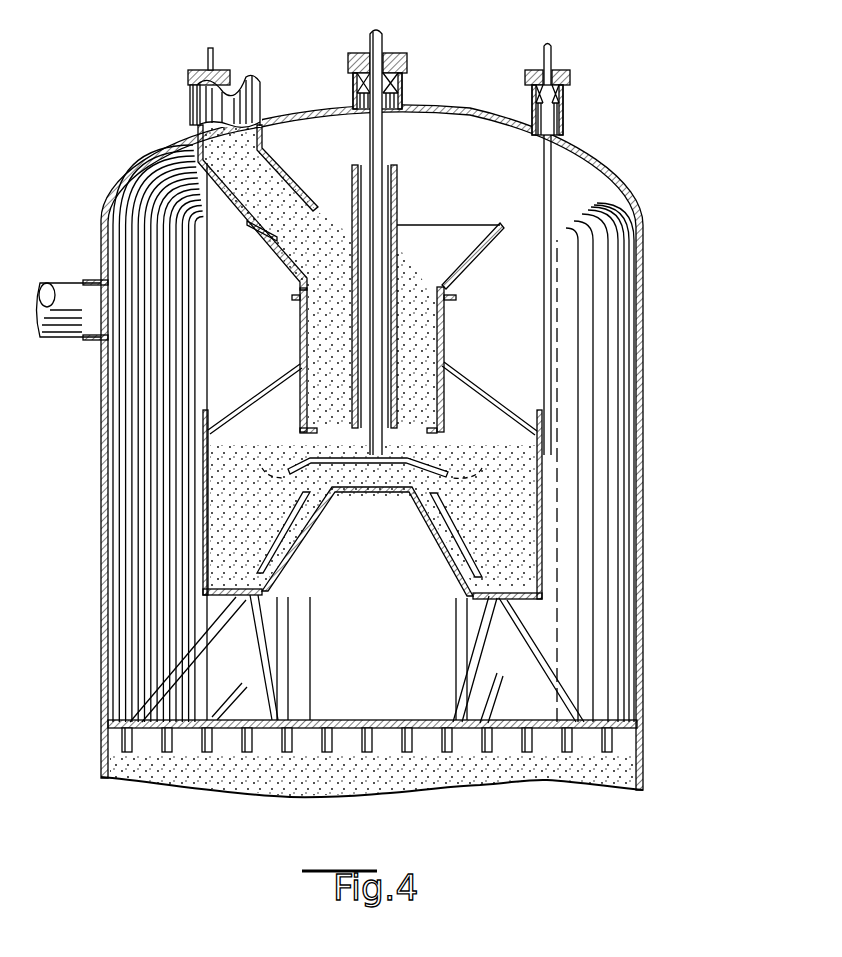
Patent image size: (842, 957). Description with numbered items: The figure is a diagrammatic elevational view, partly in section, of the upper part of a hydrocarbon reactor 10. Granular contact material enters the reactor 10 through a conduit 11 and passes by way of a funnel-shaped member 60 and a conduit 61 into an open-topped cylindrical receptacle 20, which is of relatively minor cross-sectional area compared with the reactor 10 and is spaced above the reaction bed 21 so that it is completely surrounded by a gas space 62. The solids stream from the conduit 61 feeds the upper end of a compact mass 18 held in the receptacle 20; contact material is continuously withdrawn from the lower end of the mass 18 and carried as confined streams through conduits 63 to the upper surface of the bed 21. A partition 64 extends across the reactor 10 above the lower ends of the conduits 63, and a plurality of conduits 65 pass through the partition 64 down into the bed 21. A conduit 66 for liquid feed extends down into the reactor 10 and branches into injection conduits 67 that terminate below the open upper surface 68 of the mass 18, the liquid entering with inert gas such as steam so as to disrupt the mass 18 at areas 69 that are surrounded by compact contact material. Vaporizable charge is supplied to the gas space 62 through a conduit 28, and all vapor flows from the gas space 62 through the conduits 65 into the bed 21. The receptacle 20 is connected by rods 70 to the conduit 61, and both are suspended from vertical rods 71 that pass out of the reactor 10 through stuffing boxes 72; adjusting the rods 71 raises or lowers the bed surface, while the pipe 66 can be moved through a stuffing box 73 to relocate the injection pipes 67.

The reactor 10 is at (101, 494).
The conduit 11 is at (254, 101).
The compact mass 18 is at (512, 530).
The open-topped cylindrical receptacle 20 is at (538, 556).
The reaction bed 21 is at (337, 777).
The conduit 28 is at (72, 332).
The funnel-shaped member 60 is at (478, 252).
The conduit 61 is at (447, 345).
The gas space 62 is at (613, 362).
The conduits 63 is at (207, 640).
The partition 64 is at (445, 722).
The conduits 65 is at (480, 753).
The conduit 66 is at (387, 35).
The conduits 67 is at (397, 463).
The open upper surface 68 is at (520, 490).
The areas 69 is at (262, 468).
The rods 70 is at (275, 385).
The vertical rods 71 is at (208, 330).
The stuffing boxes 72 is at (192, 103).
The stuffing box 73 is at (353, 83).